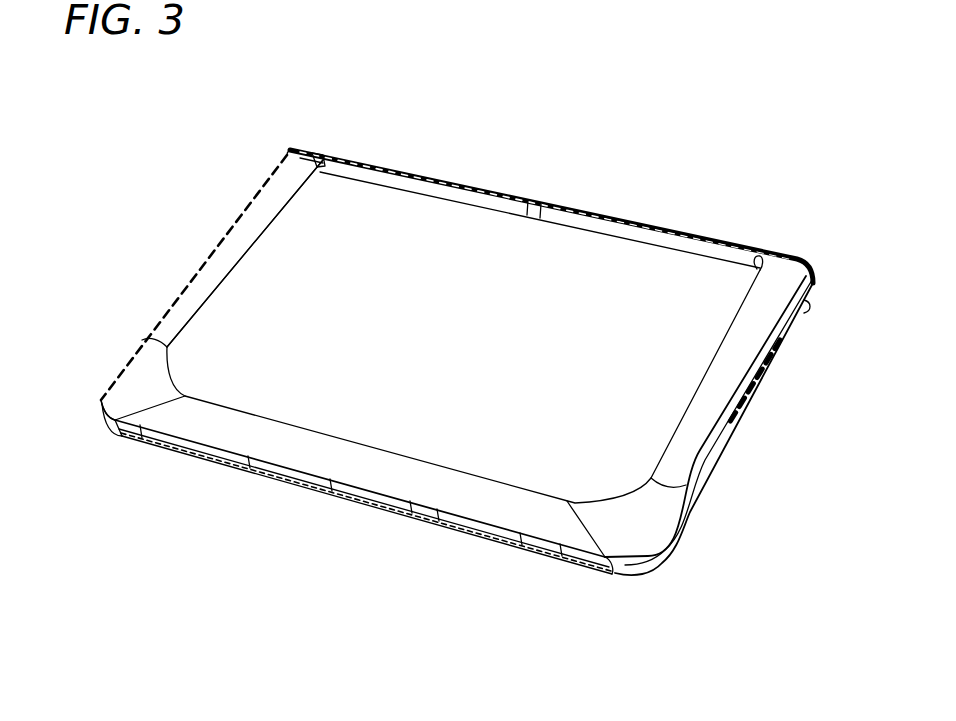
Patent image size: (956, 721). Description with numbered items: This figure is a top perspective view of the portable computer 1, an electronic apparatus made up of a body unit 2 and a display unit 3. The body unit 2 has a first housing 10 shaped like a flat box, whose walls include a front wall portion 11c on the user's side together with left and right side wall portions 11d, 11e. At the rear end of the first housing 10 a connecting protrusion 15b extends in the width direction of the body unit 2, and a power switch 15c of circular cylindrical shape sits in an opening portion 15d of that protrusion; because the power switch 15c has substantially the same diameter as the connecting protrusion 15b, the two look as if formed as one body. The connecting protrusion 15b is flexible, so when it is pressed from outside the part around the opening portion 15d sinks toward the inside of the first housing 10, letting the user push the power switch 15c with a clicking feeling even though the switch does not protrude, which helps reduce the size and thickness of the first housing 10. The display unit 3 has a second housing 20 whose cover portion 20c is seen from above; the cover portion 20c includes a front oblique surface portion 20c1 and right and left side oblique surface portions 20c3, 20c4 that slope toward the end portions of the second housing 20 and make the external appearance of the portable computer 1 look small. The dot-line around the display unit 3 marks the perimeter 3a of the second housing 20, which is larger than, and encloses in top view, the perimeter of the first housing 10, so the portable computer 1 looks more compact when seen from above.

The portable computer 1 is at (385, 113).
The body unit 2 is at (217, 474).
The display unit 3 is at (270, 224).
The perimeter of the second housing 3a is at (331, 152).
The first housing 10 is at (640, 582).
The front wall portion 11c is at (500, 543).
The left side wall portion 11d is at (103, 425).
The right side wall portion 11e is at (683, 517).
The connecting protrusion 15b is at (610, 230).
The power switch 15c is at (528, 201).
The opening portion 15d is at (543, 203).
The second housing 20 is at (697, 303).
The cover portion 20c is at (432, 327).
The front oblique surface portion 20c1 is at (360, 473).
The right side oblique surface portion 20c3 is at (687, 450).
The left side oblique surface portion 20c4 is at (213, 273).